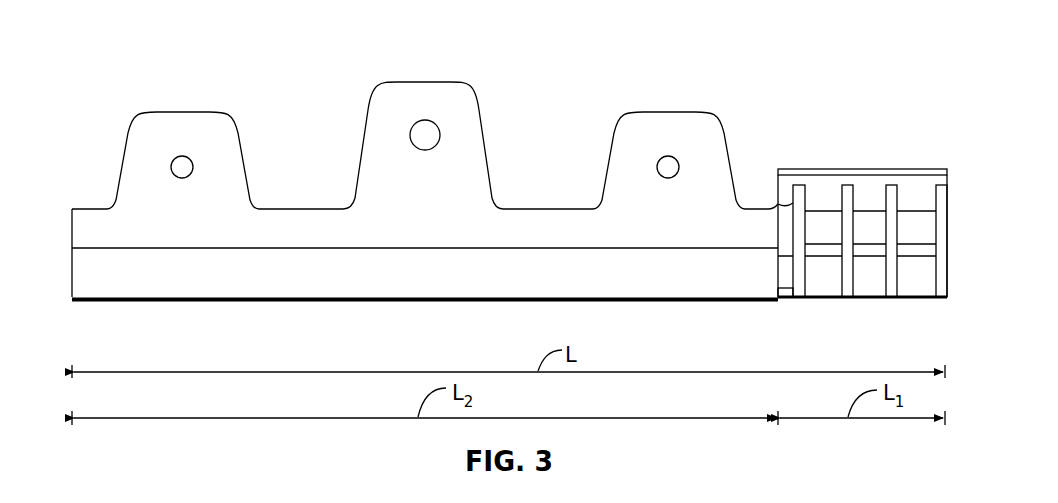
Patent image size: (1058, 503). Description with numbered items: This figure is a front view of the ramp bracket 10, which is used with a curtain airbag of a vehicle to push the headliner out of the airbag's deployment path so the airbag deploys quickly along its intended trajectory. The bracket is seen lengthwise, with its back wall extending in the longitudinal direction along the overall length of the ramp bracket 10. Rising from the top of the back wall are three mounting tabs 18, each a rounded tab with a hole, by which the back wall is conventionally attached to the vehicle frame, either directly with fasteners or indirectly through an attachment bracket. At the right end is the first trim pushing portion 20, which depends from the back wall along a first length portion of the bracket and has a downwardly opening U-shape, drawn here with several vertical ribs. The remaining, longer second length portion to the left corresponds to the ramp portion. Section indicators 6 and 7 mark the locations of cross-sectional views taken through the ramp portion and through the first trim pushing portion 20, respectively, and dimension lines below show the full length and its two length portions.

The bus bar assembly 10 is at (110, 48).
The mounting tabs 18 is at (190, 110).
The connector end 20 is at (910, 170).
The section line 6- 6 is at (425, 82).
The section line 7- 7 is at (848, 169).